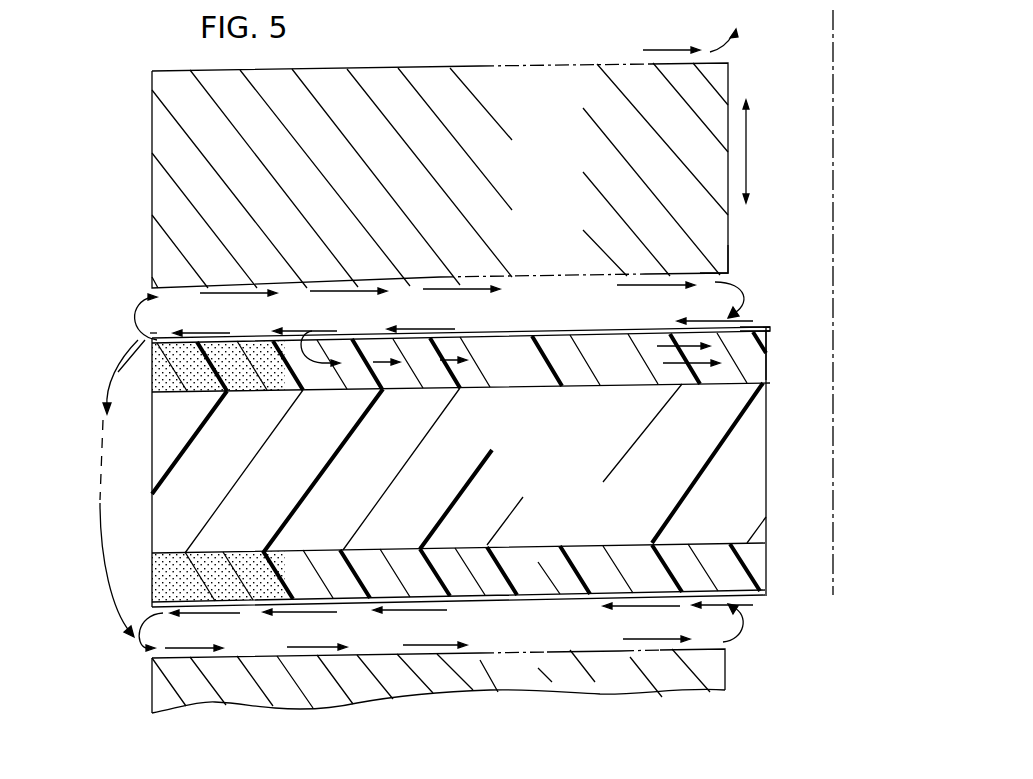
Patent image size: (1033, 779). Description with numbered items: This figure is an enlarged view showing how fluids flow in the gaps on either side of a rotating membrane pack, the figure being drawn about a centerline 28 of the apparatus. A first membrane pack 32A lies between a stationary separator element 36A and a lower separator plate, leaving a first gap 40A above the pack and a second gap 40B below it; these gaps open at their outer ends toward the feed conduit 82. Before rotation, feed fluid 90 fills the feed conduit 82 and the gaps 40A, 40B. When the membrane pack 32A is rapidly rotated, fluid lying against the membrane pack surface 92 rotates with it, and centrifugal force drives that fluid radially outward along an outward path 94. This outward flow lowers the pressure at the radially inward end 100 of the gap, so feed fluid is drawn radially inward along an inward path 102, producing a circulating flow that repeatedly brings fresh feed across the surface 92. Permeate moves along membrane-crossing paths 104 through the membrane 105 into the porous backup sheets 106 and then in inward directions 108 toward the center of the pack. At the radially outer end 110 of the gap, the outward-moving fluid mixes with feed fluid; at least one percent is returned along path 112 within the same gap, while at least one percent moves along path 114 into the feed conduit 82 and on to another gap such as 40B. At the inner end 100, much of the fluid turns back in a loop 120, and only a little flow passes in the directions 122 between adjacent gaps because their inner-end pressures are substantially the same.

The axis centerline 28 is at (832, 43).
The separator element 36A is at (141, 145).
The first membrane pack 32A is at (421, 438).
The first gap 40A is at (605, 319).
The second gap 40B is at (575, 633).
The feed conduit 82 is at (68, 243).
The feed fluid 90 is at (120, 243).
The membrane pack surface 92 is at (472, 337).
The outward path 94 is at (403, 325).
The radially inward end 100 is at (737, 285).
The inward path 102 is at (218, 296).
The membrane-crossing path 104 is at (430, 357).
The membrane 105 is at (807, 315).
The porous backup sheet 106 is at (767, 357).
The inward direction 108 is at (660, 348).
The radially outer end 110 is at (145, 325).
The return path 112 is at (140, 312).
The feed conduit path 114 is at (118, 372).
The loop 120 is at (730, 273).
The inter-gap path 122 is at (748, 137).